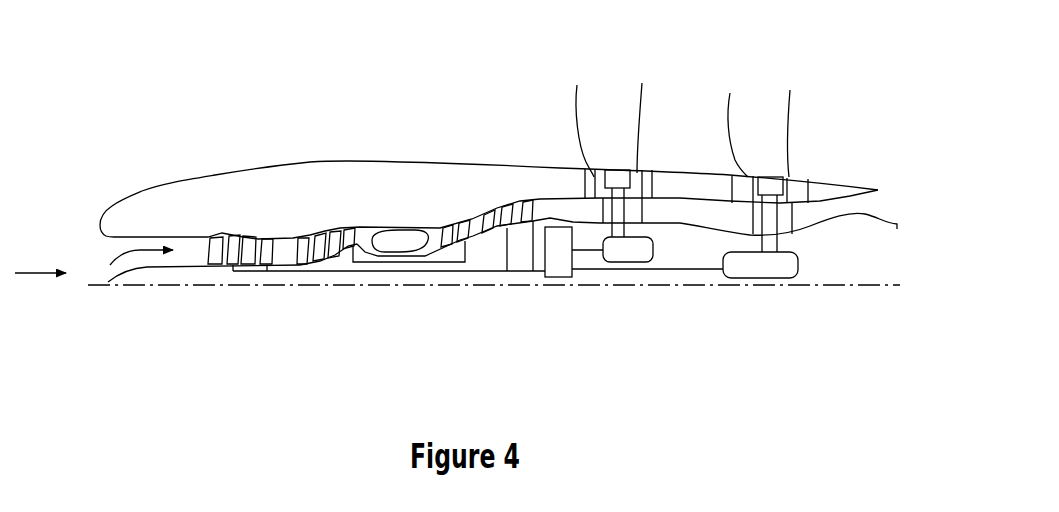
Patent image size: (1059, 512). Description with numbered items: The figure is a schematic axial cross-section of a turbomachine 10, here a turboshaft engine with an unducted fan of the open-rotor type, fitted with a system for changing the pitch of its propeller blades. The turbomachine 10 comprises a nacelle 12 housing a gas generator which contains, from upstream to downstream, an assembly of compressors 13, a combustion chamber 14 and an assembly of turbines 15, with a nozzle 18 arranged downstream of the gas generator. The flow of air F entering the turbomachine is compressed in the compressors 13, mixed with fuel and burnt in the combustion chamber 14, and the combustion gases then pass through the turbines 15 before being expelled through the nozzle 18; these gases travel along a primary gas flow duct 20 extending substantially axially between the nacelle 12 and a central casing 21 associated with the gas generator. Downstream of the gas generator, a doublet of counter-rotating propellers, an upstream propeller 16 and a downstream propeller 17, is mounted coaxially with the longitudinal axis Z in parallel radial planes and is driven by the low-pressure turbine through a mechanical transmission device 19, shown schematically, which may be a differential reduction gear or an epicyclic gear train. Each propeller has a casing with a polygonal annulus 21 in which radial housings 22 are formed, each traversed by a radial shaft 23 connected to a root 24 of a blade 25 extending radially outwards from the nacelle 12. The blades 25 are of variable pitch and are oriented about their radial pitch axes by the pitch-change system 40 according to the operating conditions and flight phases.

The turbomachine 10 is at (201, 133).
The nacelle 12 is at (350, 172).
The assembly of compressors 13 is at (307, 214).
The combustion chamber 14 is at (405, 236).
The assembly of turbines 15 is at (496, 195).
The upstream propeller 16 is at (620, 84).
The downstream propeller 17 is at (763, 96).
The nozzle 18 is at (878, 222).
The mechanical transmission device 19 is at (560, 272).
The primary gas flow duct 20 is at (720, 214).
The central casing 21 is at (449, 218).
The radial housings 22 is at (640, 183).
The radial shaft 23 is at (600, 208).
The root 24 is at (623, 180).
The blades 25 is at (581, 103).
The system for changing the pitch of the blades 40 is at (627, 258).
The flow of air F is at (33, 273).
The longitudinal axis Z is at (164, 286).